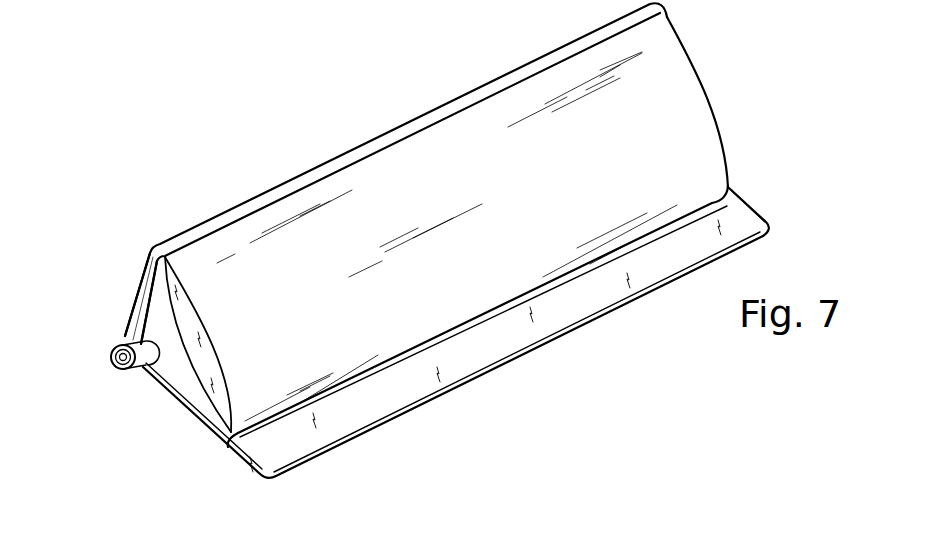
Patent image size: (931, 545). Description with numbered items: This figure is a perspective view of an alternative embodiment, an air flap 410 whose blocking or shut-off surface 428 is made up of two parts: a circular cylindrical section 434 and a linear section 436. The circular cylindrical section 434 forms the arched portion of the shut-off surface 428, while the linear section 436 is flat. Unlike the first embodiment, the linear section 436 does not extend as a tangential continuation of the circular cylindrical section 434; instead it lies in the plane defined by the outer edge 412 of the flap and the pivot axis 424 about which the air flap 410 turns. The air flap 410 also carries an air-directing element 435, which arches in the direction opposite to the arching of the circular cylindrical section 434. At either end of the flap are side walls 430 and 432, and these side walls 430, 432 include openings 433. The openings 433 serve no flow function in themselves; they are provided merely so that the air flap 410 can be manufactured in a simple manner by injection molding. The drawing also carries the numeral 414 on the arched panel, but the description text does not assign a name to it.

The air flap 410 is at (218, 117).
The outer edge 412 is at (606, 314).
The curved panel 414 is at (382, 134).
The pivot axis 424 is at (110, 362).
The blocking or shut-off surface 428 is at (673, 148).
The side wall 430 is at (727, 164).
The side wall 432 is at (160, 322).
The openings 433 is at (188, 322).
The circular cylindrical section 434 is at (673, 101).
The air-directing element 435 is at (208, 365).
The linear section 436 is at (480, 352).